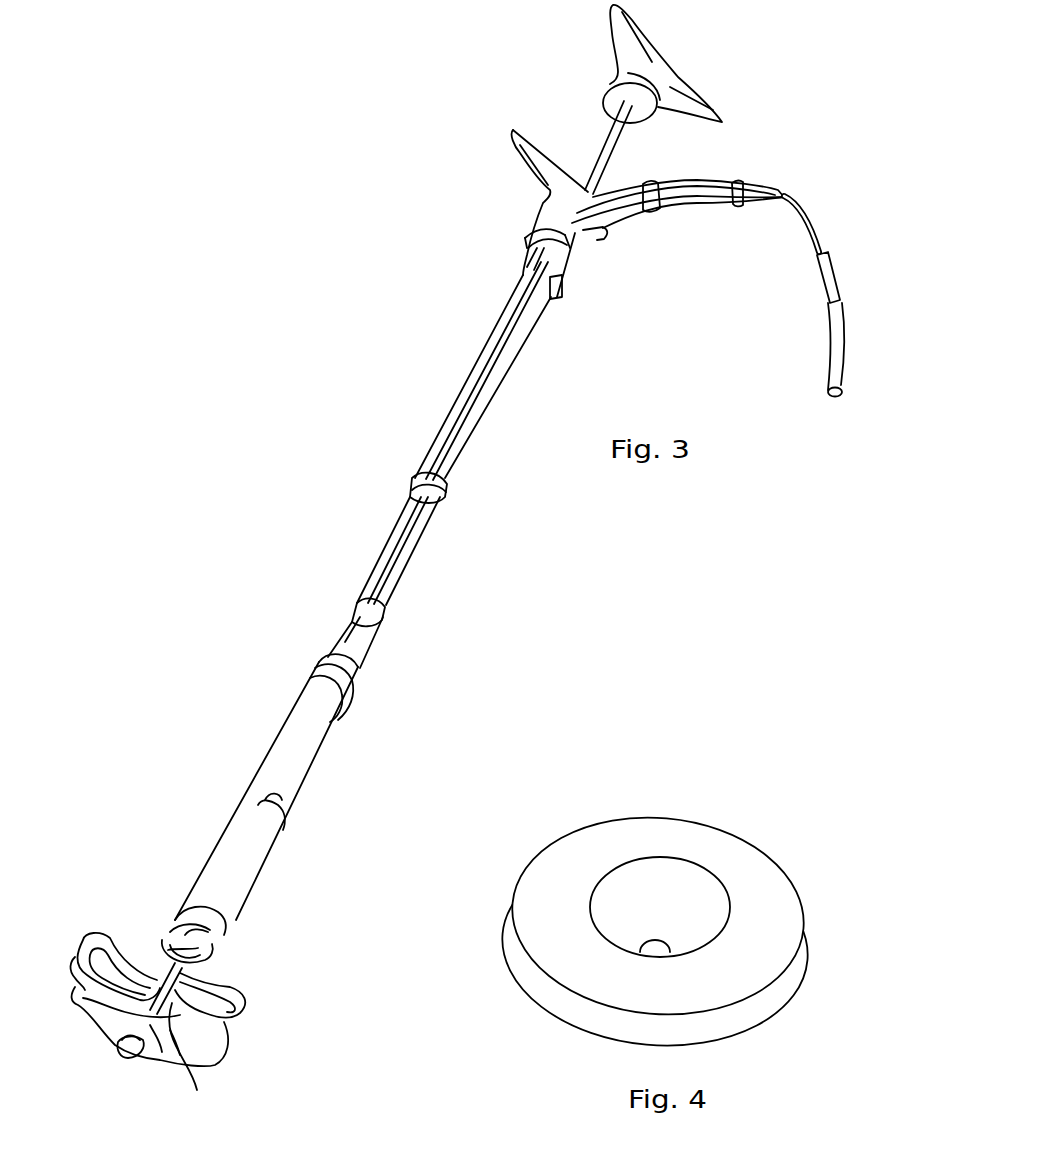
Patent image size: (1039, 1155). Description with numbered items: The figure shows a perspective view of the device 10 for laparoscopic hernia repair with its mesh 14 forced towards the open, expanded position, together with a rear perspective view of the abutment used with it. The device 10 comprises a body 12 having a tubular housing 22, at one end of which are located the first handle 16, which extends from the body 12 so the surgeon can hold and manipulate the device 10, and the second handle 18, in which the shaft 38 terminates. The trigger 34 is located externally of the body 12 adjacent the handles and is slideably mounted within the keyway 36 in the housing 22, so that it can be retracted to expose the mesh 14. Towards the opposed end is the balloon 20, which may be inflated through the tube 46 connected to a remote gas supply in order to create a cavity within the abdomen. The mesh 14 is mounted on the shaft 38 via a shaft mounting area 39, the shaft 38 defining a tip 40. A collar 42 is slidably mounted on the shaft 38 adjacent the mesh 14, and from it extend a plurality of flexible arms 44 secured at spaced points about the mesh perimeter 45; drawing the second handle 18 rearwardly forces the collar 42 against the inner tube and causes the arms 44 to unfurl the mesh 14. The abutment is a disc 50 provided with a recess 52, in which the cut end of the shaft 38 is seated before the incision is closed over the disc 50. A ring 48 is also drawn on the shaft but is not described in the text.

In FIG. 3, the device 10 is at (305, 461).
In FIG. 3, the body 12 is at (342, 622).
In FIG. 3, the mesh 14 is at (113, 1018).
In FIG. 3, the first handle 16 is at (697, 195).
In FIG. 3, the second handle 18 is at (663, 65).
In FIG. 3, the balloon 20 is at (223, 852).
In FIG. 3, the tubular housing 22 is at (402, 573).
In FIG. 3, the trigger 34 is at (598, 234).
In FIG. 3, the keyway 36 is at (470, 438).
In FIG. 3, the shaft 38 is at (607, 153).
In FIG. 3, the shaft mounting area 39 is at (125, 1037).
In FIG. 3, the tip 40 is at (128, 1058).
In FIG. 3, the collar 42 is at (165, 950).
In FIG. 3, the arms 44 is at (92, 938).
In FIG. 3, the mesh perimeter 45 is at (85, 975).
In FIG. 3, the tube 46 is at (806, 222).
In FIG. 3, the connector ring 48 is at (425, 480).
In FIG. 4, the disc 50 is at (658, 812).
In FIG. 4, the recess 52 is at (697, 895).